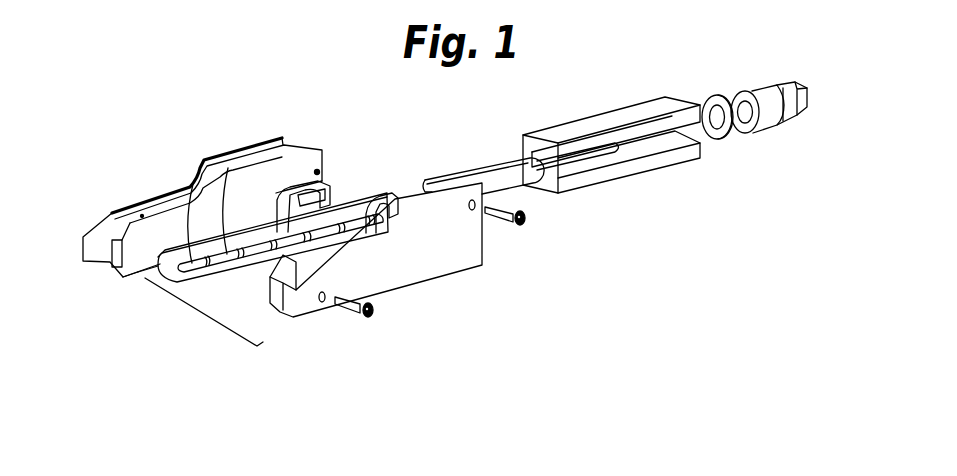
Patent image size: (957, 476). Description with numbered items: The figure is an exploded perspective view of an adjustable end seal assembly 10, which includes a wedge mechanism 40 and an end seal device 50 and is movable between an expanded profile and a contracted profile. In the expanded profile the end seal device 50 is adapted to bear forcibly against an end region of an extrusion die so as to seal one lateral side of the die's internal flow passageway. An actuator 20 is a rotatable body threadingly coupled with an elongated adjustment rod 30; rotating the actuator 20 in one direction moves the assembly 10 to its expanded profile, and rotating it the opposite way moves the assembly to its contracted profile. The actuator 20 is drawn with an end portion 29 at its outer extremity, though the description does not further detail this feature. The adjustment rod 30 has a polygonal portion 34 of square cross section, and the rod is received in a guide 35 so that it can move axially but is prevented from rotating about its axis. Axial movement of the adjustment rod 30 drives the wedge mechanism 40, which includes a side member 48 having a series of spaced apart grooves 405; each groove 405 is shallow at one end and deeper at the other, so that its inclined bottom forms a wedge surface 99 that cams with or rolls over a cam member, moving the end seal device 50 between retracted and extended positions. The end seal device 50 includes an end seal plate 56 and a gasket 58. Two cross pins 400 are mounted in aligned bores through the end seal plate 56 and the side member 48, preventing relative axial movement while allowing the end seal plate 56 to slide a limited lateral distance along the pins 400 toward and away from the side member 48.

The adjustable end seal assembly 10 is at (195, 386).
The actuator 20 is at (781, 141).
The nut 29 is at (806, 103).
The adjustment rod 30 is at (547, 165).
The polygonal portion 34 is at (512, 180).
The guide 35 is at (608, 116).
The wedge mechanism 40 is at (190, 306).
The side member 48 is at (413, 270).
The end seal device 50 is at (338, 158).
The end seal plate 56 is at (120, 277).
The gasket 58 is at (105, 222).
The wedge surfaces 99 is at (226, 170).
The cross pins 400 is at (356, 318).
The grooves 405 is at (362, 216).